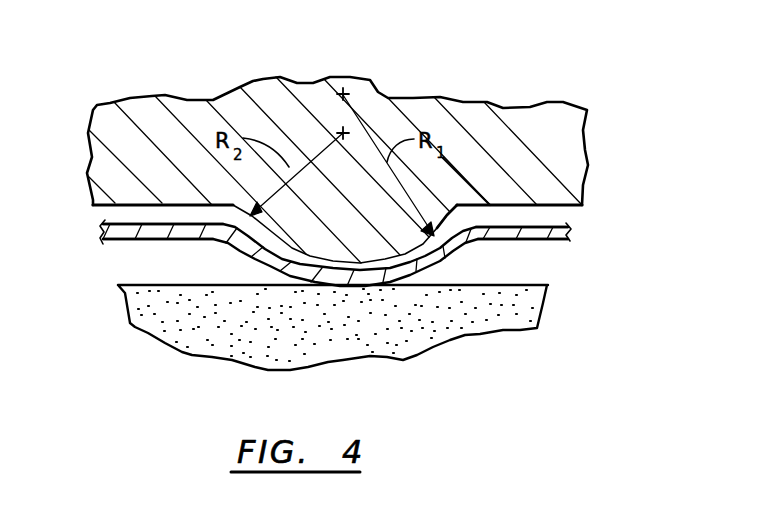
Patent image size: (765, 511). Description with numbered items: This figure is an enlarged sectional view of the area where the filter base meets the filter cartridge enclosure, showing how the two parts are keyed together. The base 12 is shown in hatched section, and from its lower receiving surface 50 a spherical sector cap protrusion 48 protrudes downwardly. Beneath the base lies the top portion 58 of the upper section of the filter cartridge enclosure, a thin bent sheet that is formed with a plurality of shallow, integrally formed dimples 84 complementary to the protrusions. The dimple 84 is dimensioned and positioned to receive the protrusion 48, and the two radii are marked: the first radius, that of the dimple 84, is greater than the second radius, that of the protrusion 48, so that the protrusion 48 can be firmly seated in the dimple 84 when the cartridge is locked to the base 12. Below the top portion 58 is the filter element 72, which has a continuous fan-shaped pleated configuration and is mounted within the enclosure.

The base 12 is at (487, 102).
The spherical sector cap protrusion 48 is at (338, 256).
The lower receiving surface 50 is at (558, 207).
The top portion 58 is at (500, 227).
The dimple 84 is at (268, 246).
The filter element 72 is at (466, 331).